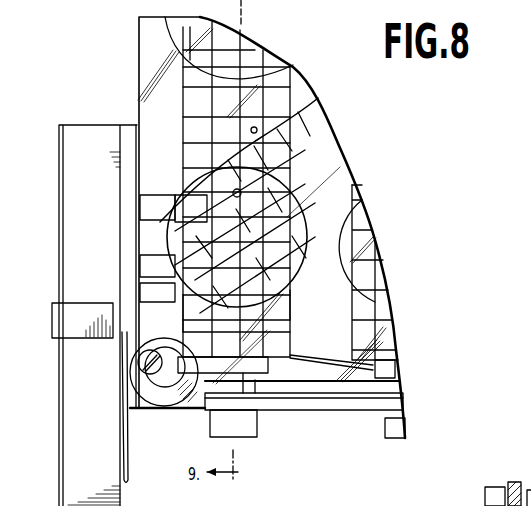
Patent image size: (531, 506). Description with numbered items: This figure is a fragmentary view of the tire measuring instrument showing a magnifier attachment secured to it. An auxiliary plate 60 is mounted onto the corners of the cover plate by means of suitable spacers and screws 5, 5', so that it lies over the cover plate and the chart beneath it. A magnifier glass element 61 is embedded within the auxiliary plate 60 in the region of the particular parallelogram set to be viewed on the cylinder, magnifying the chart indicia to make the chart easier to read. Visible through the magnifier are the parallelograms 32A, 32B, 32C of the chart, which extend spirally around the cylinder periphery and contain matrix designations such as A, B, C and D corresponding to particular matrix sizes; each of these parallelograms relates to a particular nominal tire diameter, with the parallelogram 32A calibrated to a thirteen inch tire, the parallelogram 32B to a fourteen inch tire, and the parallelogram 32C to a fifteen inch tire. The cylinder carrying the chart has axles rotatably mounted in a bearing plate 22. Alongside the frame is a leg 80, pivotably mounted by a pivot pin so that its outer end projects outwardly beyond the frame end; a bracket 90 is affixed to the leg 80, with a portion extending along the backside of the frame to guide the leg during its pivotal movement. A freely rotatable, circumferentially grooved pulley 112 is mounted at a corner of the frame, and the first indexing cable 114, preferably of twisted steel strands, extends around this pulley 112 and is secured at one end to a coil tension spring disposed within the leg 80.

The auxiliary plate 60 is at (148, 76).
The parallelogram 32C is at (217, 172).
The parallelogram 32B is at (291, 307).
The parallelogram 32A is at (200, 292).
The magnifier glass element 61 is at (294, 257).
The leg 80 is at (72, 440).
The bracket 90 is at (60, 322).
The pulley 112 is at (158, 397).
The screw 5' is at (127, 372).
The first indexing cable 114 is at (127, 468).
The bearing plate 22 is at (307, 404).
The screw 5 is at (518, 454).